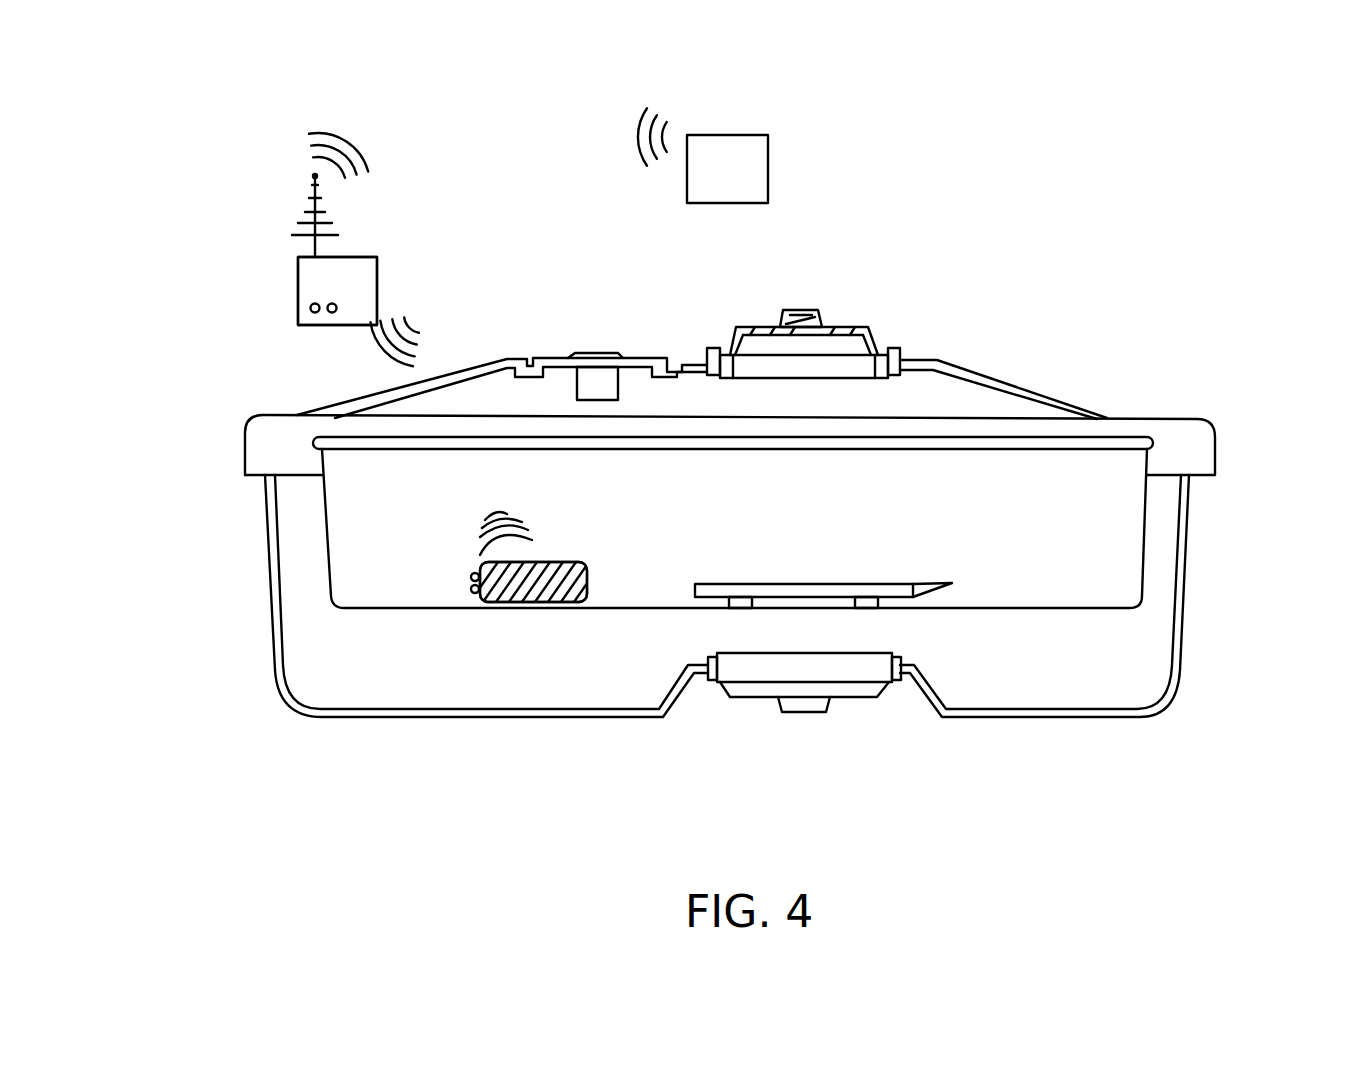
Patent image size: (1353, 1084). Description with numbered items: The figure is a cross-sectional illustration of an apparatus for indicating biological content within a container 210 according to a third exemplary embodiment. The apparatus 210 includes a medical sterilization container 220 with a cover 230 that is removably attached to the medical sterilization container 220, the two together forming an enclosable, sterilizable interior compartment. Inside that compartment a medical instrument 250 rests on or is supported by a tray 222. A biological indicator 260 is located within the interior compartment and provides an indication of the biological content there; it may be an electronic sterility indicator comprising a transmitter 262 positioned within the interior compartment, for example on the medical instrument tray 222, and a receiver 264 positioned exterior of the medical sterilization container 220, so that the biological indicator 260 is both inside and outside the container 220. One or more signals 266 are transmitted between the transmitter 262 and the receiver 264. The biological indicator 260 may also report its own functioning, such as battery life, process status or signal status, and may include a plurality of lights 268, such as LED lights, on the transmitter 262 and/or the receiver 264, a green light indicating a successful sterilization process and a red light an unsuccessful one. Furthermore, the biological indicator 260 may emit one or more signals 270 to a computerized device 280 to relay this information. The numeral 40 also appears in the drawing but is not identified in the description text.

The apparatus for indicating biological content within a container 210 is at (1110, 298).
The medical sterilization container 220 is at (270, 590).
The tray 222 is at (477, 575).
The cover 230 is at (265, 442).
The medical instrument 250 is at (817, 588).
The biological indicator 260 is at (355, 256).
The transmitter 262 is at (498, 590).
The receiver 264 is at (363, 290).
The signals 266 is at (410, 342).
The lights 268 is at (311, 304).
The signals 270 is at (628, 127).
The computerized device 280 is at (727, 169).
The cavity between containers 40 is at (400, 668).